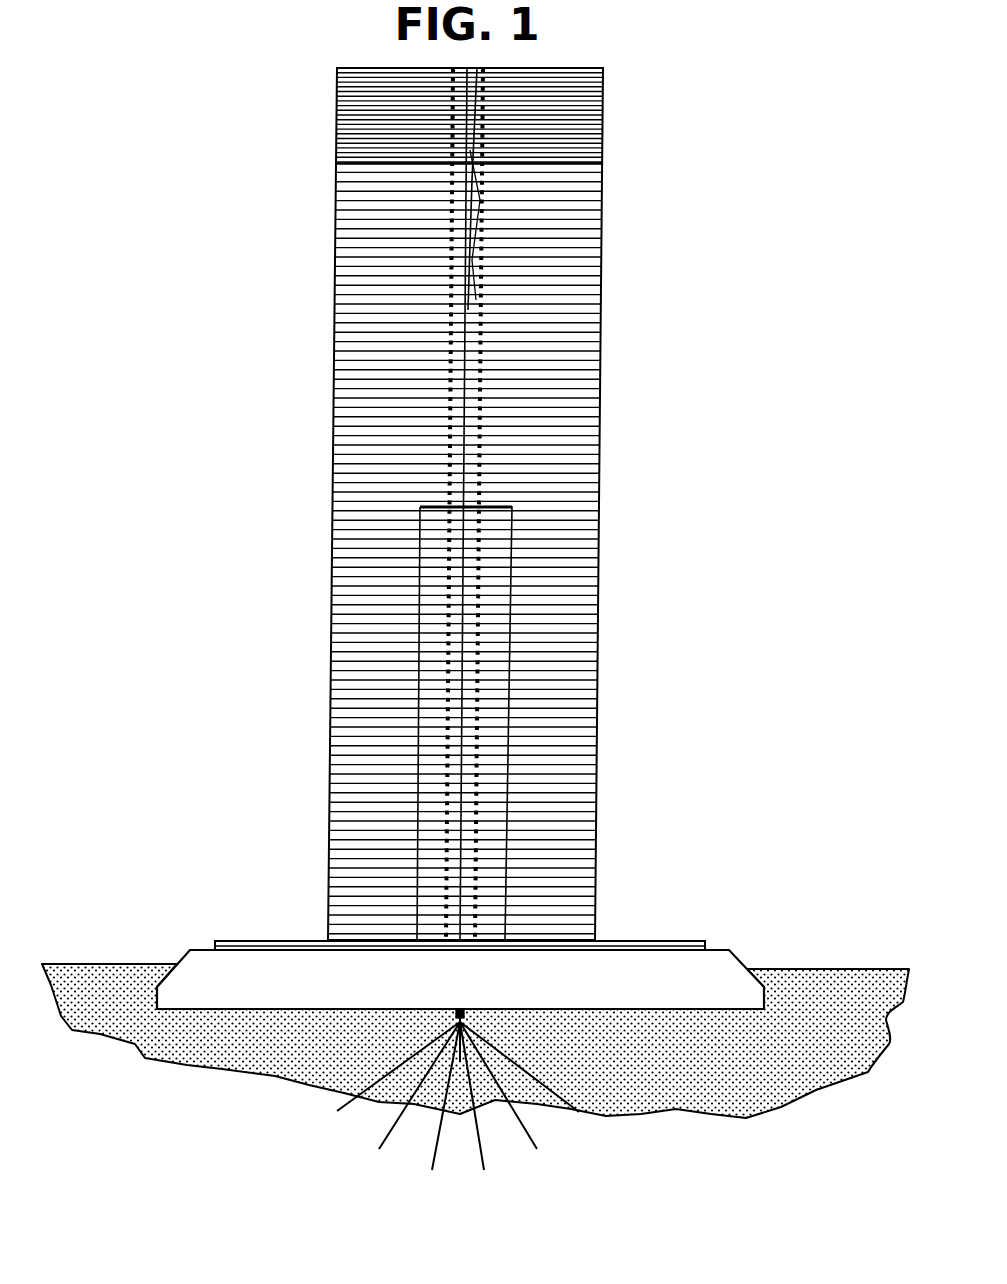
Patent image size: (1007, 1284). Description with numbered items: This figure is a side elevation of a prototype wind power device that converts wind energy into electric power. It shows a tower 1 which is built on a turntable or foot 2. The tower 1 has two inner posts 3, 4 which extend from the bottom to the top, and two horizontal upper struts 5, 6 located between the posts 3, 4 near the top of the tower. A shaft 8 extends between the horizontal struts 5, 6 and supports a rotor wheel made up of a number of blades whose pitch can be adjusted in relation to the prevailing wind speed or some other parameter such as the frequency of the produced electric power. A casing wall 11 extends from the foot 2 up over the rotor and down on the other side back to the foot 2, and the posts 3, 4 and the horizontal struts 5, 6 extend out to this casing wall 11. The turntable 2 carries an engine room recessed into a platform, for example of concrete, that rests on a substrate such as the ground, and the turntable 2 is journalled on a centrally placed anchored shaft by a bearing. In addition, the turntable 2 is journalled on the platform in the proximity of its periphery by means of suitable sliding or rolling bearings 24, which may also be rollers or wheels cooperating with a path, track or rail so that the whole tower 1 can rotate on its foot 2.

The tower 1 is at (633, 662).
The turntable or foot 2 is at (620, 942).
The inner post 3 is at (452, 460).
The inner post 4 is at (485, 435).
The horizontal upper strut 5 is at (603, 230).
The horizontal upper strut 6 is at (372, 147).
The shaft 8 is at (478, 162).
The casing wall 11 is at (560, 767).
The sliding or rolling bearings 24 is at (678, 945).